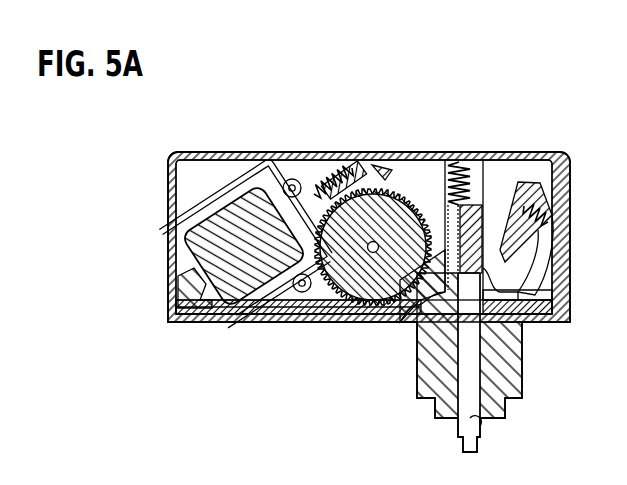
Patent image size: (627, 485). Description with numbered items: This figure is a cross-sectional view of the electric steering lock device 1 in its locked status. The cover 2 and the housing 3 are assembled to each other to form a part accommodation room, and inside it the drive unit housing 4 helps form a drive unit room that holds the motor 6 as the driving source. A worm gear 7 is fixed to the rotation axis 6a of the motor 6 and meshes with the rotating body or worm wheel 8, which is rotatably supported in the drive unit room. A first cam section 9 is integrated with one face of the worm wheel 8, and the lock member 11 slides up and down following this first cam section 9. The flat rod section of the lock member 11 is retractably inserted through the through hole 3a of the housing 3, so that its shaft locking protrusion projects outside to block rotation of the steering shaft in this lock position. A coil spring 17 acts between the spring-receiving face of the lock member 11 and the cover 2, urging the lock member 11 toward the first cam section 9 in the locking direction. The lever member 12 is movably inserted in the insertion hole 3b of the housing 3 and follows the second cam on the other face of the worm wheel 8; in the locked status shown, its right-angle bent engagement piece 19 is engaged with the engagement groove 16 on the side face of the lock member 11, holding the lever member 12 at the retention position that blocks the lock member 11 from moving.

The electric steering lock device 1 is at (164, 183).
The cover 2 is at (172, 208).
The housing 3 is at (236, 324).
The through hole 3a is at (478, 424).
The insertion hole 3b is at (556, 289).
The drive unit housing 4 is at (178, 292).
The motor 6 is at (198, 252).
The rotation axis 6a is at (290, 156).
The worm gear 7 is at (336, 162).
The rotating body (worm wheel) 8 is at (380, 162).
The first cam section 9 is at (373, 247).
The lock member 11 is at (460, 425).
The lever member 12 is at (500, 318).
The engagement groove 16 is at (453, 304).
The coil spring 17 is at (445, 162).
The engagement piece 19 is at (522, 327).